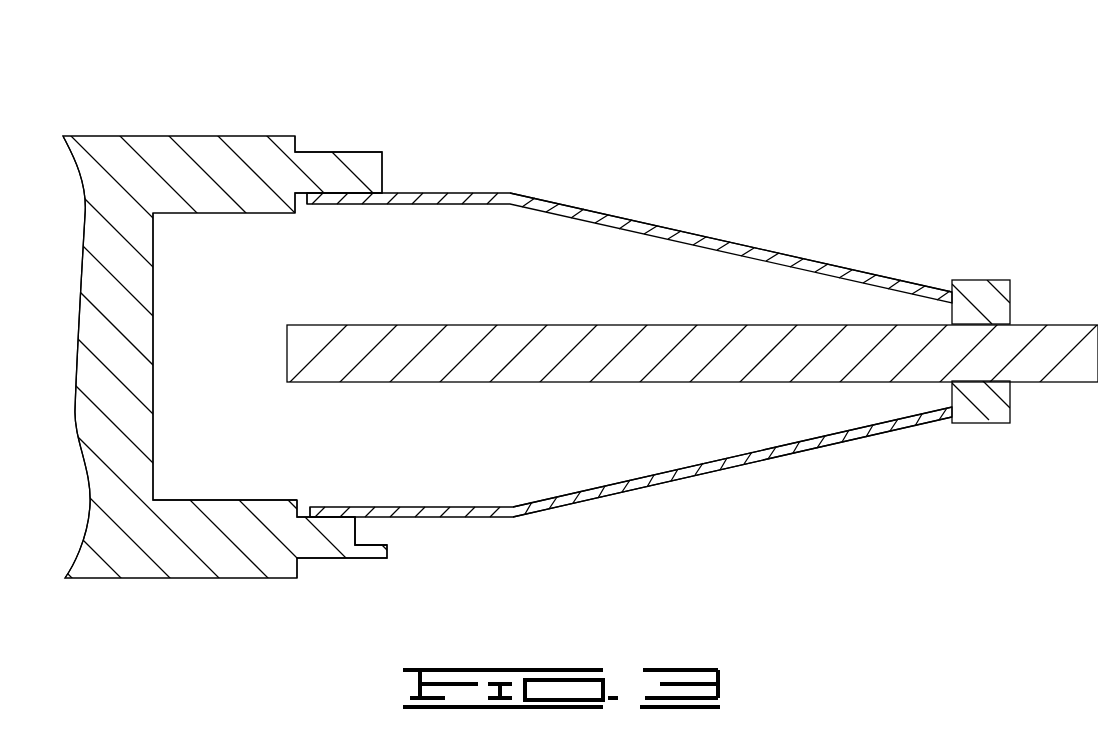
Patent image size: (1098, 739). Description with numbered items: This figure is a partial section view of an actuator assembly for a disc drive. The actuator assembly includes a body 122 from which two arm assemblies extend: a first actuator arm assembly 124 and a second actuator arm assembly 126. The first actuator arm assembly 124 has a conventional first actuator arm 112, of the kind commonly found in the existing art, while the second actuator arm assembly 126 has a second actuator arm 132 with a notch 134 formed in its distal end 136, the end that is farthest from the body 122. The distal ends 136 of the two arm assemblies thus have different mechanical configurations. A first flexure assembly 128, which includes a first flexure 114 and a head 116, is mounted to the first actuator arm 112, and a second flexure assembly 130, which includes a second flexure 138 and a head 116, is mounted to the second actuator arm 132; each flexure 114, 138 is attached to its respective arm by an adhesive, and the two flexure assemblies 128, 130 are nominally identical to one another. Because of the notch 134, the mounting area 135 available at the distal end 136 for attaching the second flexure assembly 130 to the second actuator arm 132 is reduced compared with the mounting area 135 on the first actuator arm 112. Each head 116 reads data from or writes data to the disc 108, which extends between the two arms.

The disc 108 is at (600, 338).
The first actuator arm 112 is at (212, 148).
The first flexure 114 is at (510, 193).
The head 116 is at (977, 280).
The body 122 is at (120, 148).
The first actuator arm assembly 124 is at (347, 142).
The second actuator arm assembly 126 is at (313, 480).
The first flexure assembly 128 is at (712, 190).
The second flexure assembly 130 is at (783, 484).
The second actuator arm 132 is at (175, 508).
The notch 134 is at (372, 530).
The mounting area 135 is at (325, 204).
The distal end 136 is at (341, 561).
The second flexure 138 is at (660, 482).